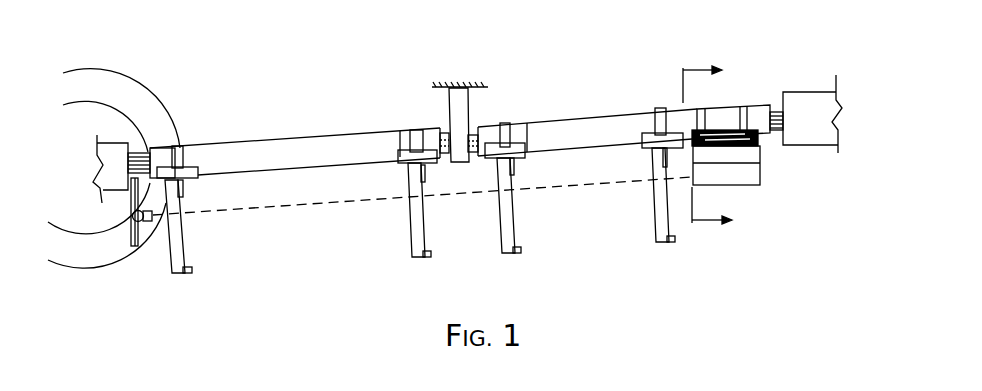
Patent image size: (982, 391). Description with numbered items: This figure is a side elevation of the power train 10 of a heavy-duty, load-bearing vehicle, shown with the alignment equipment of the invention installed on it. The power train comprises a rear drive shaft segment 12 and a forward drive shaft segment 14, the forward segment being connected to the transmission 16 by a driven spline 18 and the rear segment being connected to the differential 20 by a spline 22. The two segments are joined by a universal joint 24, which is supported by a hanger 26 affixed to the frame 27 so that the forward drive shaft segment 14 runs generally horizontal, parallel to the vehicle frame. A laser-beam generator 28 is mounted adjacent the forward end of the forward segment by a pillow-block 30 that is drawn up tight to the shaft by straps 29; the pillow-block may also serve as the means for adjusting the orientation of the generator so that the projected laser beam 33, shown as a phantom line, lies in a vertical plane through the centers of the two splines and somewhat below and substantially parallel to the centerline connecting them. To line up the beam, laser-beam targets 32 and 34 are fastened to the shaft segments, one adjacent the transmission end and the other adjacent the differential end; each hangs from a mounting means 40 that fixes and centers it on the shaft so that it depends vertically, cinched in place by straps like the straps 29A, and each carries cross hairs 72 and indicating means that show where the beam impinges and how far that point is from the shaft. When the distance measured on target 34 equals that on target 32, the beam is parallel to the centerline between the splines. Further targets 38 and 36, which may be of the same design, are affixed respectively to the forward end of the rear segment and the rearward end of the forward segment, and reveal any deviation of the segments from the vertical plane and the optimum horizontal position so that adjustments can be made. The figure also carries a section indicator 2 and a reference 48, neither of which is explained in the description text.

The power train 10 is at (347, 104).
The rear drive shaft segment 12 is at (272, 141).
The forward drive shaft segment 14 is at (588, 127).
The transmission 16 is at (805, 100).
The driven spline 18 is at (775, 132).
The differential 20 is at (110, 142).
The spline 22 is at (140, 150).
The universal joint 24 is at (447, 160).
The hanger 26 is at (462, 120).
The frame 27 is at (457, 88).
The laser-beam generator 28 is at (745, 177).
The straps 29 is at (740, 108).
The straps 29A is at (507, 122).
The pillow-block 30 is at (727, 133).
The laser-beam target 32 is at (655, 230).
The laser beam 33 is at (315, 204).
The laser-beam target 34 is at (187, 253).
The target 36 is at (516, 237).
The target 38 is at (408, 243).
The mounting means 40 is at (181, 167).
The bearing 48 is at (133, 153).
The cross hairs 72 is at (133, 246).
The section line 2- 2 is at (707, 145).